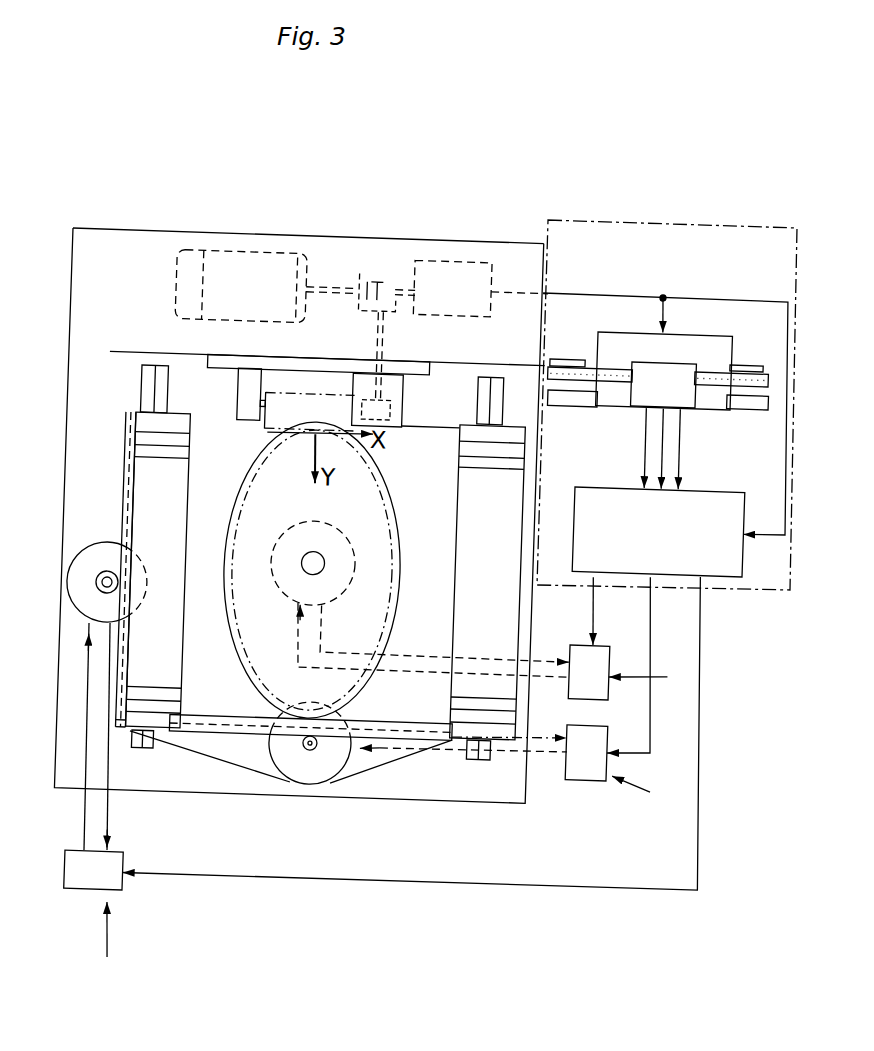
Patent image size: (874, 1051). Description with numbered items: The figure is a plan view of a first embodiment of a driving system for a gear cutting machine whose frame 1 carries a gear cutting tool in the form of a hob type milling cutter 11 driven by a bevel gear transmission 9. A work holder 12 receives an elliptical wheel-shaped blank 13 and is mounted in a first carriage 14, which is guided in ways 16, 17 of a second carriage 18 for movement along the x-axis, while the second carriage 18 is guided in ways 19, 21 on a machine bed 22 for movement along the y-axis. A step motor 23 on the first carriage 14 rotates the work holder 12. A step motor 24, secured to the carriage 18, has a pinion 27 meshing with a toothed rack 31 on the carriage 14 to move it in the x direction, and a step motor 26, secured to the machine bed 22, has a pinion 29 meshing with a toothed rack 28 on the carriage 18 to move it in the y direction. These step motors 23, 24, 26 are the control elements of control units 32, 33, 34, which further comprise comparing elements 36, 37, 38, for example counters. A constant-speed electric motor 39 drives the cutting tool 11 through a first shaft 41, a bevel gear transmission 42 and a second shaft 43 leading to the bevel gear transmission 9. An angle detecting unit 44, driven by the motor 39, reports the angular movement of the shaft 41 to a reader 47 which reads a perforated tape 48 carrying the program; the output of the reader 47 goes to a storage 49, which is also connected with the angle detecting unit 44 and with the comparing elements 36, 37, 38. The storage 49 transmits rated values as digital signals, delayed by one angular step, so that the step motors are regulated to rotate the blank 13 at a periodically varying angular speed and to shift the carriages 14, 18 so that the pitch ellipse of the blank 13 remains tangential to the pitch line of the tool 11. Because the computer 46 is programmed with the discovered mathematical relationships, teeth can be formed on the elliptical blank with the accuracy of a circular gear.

The frame 1 is at (309, 222).
The bevel gear transmission 9 is at (402, 409).
The hob type milling cutter 11 is at (326, 407).
The work holder 12 is at (337, 544).
The elliptical wheel-shaped blank 13 is at (198, 399).
The first carriage 14 is at (309, 777).
The way 16 is at (99, 674).
The way 17 is at (104, 416).
The second carriage 18 is at (100, 567).
The way 19 is at (79, 757).
The way 21 is at (432, 518).
The machine bed 22 is at (274, 514).
The step motor 23 is at (421, 598).
The step motor 24 is at (280, 765).
The step motor 26 is at (79, 684).
The pinion 27 is at (348, 745).
The toothed rack 28 is at (73, 567).
The pinion 29 is at (67, 587).
The toothed rack 31 is at (68, 731).
The control unit 32 is at (653, 681).
The control unit 33 is at (648, 797).
The control unit 34 is at (109, 951).
The comparing element 36 is at (603, 655).
The comparing element 37 is at (530, 778).
The comparing element 38 is at (79, 902).
The constant-speed electric motor 39 is at (242, 264).
The first shaft 41 is at (362, 250).
The bevel gear transmission 42 is at (402, 260).
The second shaft 43 is at (406, 357).
The angle detecting unit 44 is at (481, 264).
The computer 46 is at (670, 382).
The reader 47 is at (664, 394).
The perforated tape 48 is at (657, 408).
The storage 49 is at (435, 641).